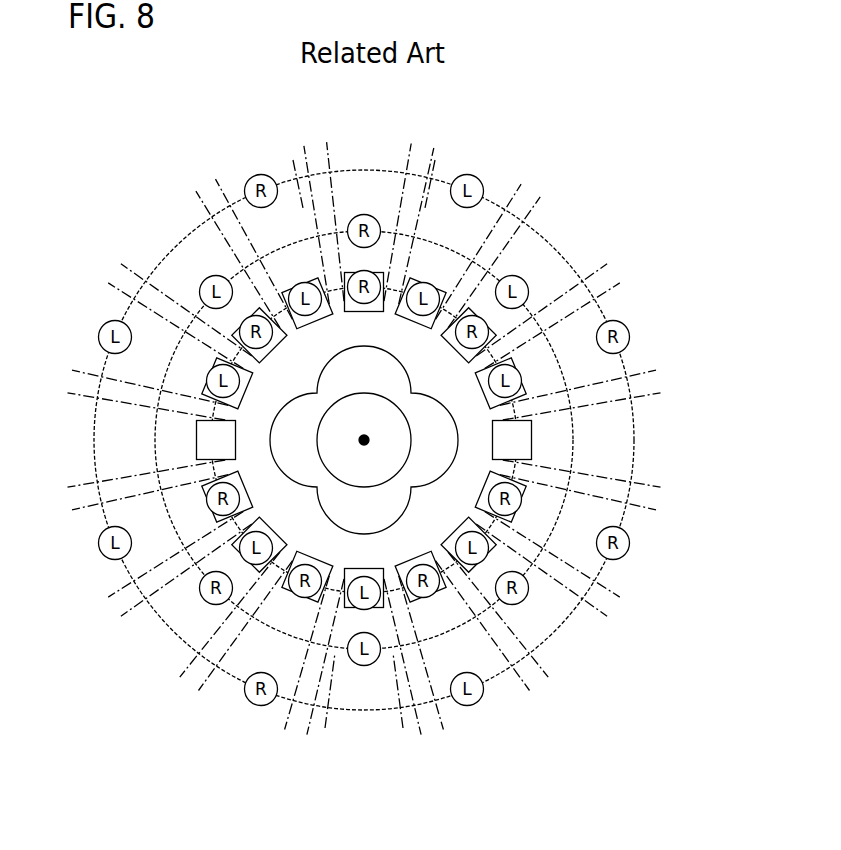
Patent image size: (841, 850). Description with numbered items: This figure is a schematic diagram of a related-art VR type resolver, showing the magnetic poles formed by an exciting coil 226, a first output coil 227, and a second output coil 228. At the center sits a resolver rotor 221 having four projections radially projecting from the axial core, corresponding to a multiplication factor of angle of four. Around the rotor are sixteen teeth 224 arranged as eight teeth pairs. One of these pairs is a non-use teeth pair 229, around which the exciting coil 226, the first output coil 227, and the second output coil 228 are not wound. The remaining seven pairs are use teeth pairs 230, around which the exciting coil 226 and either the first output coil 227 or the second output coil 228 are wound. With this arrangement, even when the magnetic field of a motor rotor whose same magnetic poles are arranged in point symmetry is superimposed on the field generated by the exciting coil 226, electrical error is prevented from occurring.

The resolver rotor 221 is at (367, 372).
The teeth 224 is at (363, 441).
The exciting coil 226 is at (335, 577).
The first output coil 227 is at (328, 690).
The second output coil 228 is at (284, 702).
The non-use teeth pair 229 is at (660, 442).
The use teeth pairs 230 is at (404, 428).